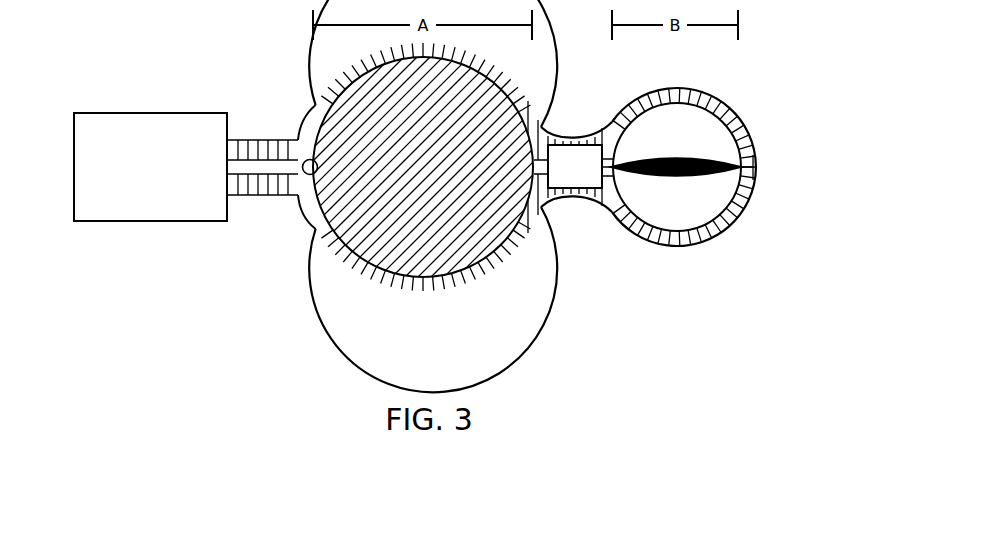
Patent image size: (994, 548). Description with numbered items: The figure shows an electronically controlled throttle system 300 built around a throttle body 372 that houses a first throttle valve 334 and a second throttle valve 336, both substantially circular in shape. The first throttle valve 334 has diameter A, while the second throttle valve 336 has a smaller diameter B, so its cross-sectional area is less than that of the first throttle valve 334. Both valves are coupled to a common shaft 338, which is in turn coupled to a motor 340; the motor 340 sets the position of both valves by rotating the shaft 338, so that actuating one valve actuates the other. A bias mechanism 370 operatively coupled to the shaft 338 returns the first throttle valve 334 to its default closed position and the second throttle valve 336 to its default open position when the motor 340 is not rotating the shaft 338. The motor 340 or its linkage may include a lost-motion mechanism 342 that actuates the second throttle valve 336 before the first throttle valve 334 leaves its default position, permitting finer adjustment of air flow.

The electronically controlled throttle system 300 is at (118, 28).
The first throttle valve 334 is at (492, 110).
The second throttle valve 336 is at (662, 158).
The shaft 338 is at (255, 168).
The motor 340 is at (136, 176).
The lost-motion mechanism 342 is at (561, 176).
The bias mechanism 370 is at (310, 160).
The throttle body 372 is at (603, 127).